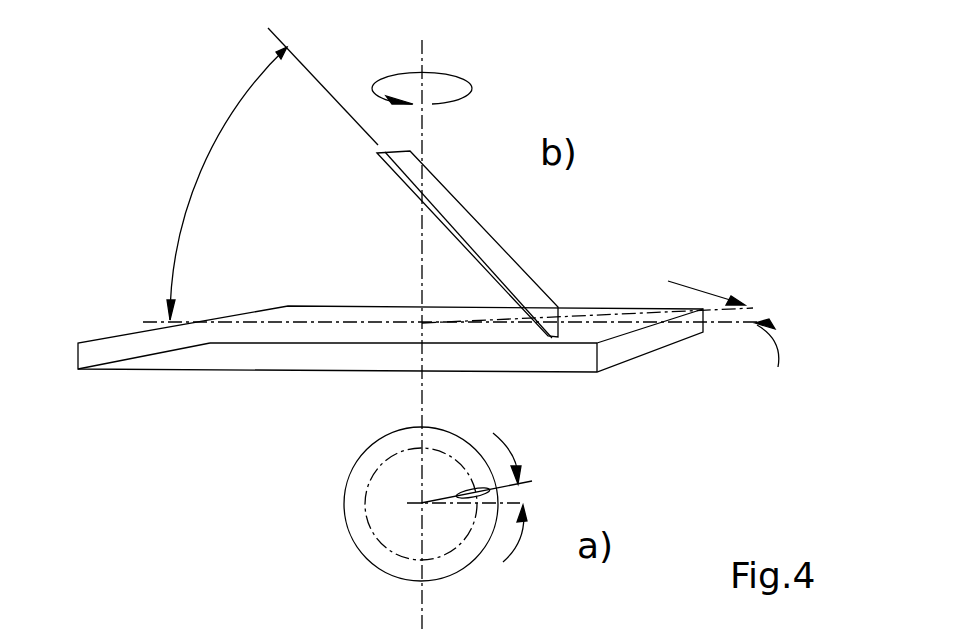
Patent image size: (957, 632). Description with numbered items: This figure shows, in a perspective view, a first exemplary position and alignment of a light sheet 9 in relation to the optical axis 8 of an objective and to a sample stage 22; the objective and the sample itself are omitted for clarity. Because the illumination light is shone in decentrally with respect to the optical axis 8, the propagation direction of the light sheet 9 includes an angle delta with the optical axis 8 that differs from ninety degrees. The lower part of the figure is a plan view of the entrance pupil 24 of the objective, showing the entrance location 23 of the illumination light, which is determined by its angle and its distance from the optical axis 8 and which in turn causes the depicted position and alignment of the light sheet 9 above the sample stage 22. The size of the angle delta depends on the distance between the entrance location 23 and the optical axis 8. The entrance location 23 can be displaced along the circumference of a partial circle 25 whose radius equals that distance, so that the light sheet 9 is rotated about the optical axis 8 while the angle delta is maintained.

The optical axis 8 is at (420, 263).
The light sheet 9 is at (507, 267).
The sample stage 22 is at (223, 358).
The entrance location 23 is at (467, 488).
The entrance pupil 24 is at (362, 537).
The partial circle 25 is at (372, 478).